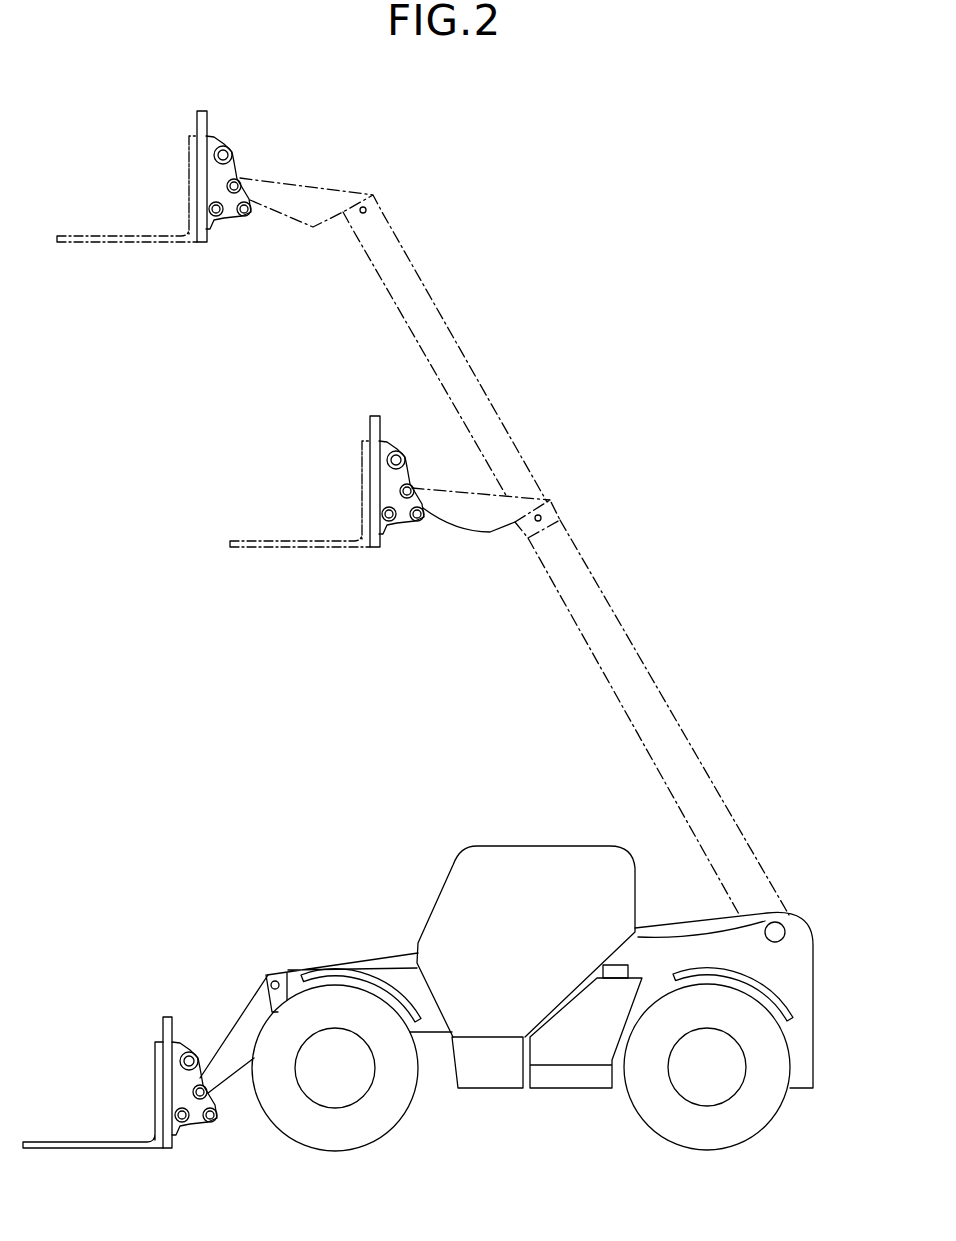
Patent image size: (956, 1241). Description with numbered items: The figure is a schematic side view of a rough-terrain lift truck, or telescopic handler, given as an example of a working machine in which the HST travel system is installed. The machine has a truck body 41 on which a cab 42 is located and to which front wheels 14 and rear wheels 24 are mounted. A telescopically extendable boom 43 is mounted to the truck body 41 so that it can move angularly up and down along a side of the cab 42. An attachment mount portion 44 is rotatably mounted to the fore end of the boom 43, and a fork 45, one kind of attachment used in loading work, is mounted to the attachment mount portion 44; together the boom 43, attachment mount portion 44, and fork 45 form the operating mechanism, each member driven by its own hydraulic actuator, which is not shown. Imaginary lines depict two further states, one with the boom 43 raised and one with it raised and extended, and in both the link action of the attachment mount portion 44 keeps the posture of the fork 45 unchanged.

The front wheels 14 is at (335, 1151).
The rear wheels 24 is at (712, 1150).
The truck body 41 is at (816, 972).
The cab 42 is at (522, 846).
The telescopically extendable boom 43 is at (356, 956).
The attachment mount portion 44 is at (187, 1084).
The fork 45 is at (153, 1115).